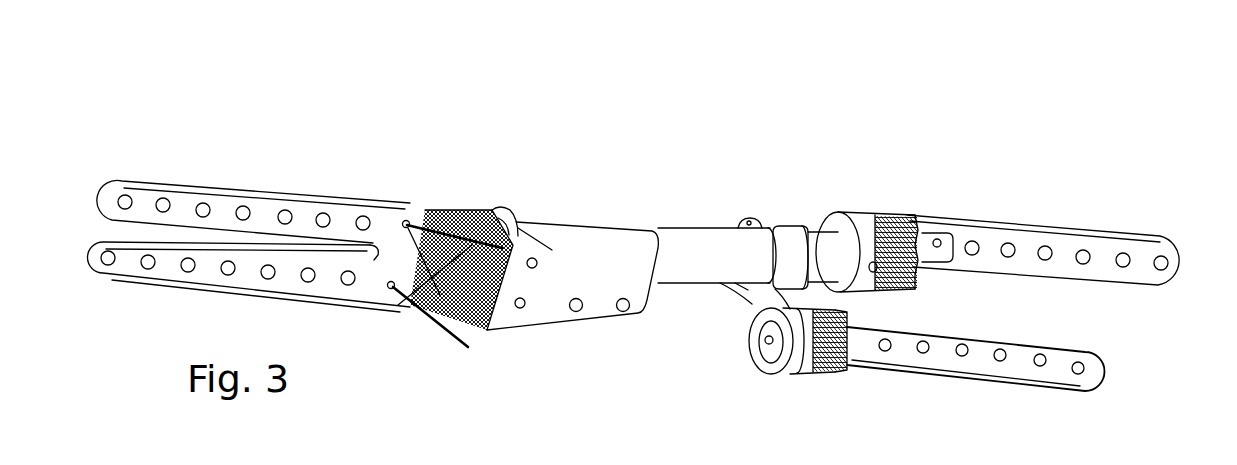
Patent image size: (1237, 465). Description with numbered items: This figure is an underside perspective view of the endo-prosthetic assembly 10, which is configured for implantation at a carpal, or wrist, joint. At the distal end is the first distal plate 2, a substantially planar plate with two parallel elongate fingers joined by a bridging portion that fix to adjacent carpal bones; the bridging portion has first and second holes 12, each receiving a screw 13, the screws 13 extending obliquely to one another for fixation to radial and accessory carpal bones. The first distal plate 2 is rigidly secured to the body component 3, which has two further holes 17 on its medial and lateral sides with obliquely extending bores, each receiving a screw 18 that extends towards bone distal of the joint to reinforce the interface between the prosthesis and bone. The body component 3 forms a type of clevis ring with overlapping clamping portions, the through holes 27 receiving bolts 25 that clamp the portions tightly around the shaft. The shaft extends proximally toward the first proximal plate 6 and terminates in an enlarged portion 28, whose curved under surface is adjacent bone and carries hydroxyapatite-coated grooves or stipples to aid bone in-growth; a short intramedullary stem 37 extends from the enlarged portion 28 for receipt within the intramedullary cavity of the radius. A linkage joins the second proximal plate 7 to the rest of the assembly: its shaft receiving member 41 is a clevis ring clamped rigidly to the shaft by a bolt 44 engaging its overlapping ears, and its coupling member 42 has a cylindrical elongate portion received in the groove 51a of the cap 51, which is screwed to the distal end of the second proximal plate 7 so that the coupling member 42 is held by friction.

The first distal plate 2 is at (225, 205).
The body component 3 is at (577, 233).
The first proximal plate 6 is at (1067, 245).
The second proximal plate 7 is at (1022, 363).
The endo-prosthetic assembly 10 is at (704, 168).
The first and second holes 12 is at (413, 203).
The screw 13 is at (427, 227).
The further holes 17 is at (503, 220).
The screw 18 is at (413, 287).
The bolt 25 is at (578, 299).
The through holes 27 is at (573, 312).
The enlarged portion 28 is at (870, 227).
The intramedullary stem 37 is at (937, 260).
The shaft receiving member 41 is at (780, 233).
The coupling member 42 is at (760, 295).
The bolt 44 is at (768, 347).
The cap 51 is at (783, 372).
The groove 51a is at (803, 347).